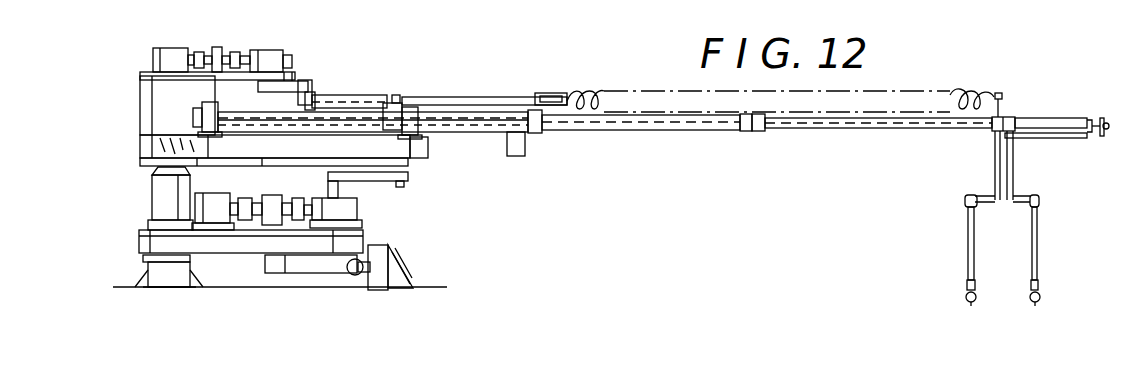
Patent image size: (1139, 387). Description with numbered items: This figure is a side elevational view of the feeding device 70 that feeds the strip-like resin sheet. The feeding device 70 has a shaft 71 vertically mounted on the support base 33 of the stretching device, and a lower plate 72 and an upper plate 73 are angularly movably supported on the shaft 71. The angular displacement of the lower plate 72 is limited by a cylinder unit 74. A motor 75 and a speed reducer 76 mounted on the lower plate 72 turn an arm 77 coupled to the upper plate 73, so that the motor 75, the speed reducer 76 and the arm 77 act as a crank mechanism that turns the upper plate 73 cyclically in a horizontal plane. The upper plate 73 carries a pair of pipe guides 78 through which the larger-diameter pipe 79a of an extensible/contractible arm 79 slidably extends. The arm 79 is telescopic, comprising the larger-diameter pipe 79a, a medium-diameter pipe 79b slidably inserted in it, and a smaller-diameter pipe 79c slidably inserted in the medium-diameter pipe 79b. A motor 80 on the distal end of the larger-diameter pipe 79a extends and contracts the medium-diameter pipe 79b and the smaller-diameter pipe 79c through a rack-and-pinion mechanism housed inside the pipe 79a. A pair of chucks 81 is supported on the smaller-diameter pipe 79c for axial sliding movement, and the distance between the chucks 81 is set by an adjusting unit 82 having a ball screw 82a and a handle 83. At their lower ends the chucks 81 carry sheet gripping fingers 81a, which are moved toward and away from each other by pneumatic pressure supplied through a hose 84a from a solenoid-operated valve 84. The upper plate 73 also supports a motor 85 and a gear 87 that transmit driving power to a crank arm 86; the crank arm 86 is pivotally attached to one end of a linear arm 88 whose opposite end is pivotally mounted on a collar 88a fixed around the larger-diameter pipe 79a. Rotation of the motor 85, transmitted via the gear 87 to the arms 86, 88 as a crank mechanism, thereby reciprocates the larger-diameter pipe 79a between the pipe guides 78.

The support base 33 is at (278, 284).
The feeding device 70 is at (470, 199).
The shaft 71 is at (165, 200).
The lower plate 72 is at (150, 240).
The upper plate 73 is at (150, 138).
The cylinder unit 74 is at (330, 266).
The motor 75 is at (220, 204).
The speed reducer 76 is at (345, 210).
The arm 77 is at (375, 178).
The pipe guides 78 is at (205, 118).
The extensible/contractible arm 79 is at (636, 140).
The larger-diameter pipe 79a is at (487, 125).
The medium-diameter pipe 79b is at (710, 132).
The smaller-diameter pipe 79c is at (838, 130).
The motor 80 is at (518, 154).
The chucks 81 is at (968, 245).
The sheet gripping fingers 81a is at (976, 299).
The adjusting unit 82 is at (1081, 108).
The ball screw 82a is at (1065, 138).
The handle 83 is at (1104, 137).
The solenoid-operated valve 84 is at (548, 96).
The hose 84a is at (590, 100).
The motor 85 is at (172, 52).
The crank arm 86 is at (300, 86).
The gear 87 is at (263, 55).
The linear arm 88 is at (358, 96).
The collar 88a is at (390, 102).